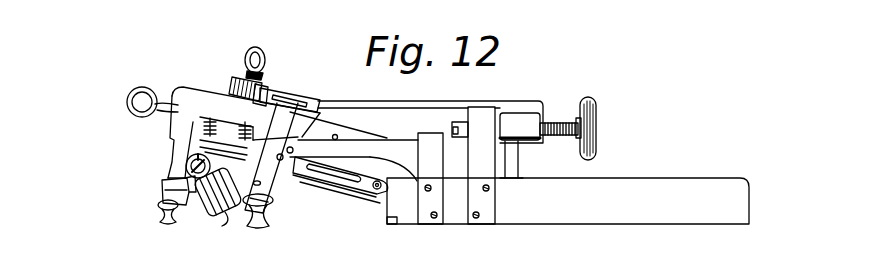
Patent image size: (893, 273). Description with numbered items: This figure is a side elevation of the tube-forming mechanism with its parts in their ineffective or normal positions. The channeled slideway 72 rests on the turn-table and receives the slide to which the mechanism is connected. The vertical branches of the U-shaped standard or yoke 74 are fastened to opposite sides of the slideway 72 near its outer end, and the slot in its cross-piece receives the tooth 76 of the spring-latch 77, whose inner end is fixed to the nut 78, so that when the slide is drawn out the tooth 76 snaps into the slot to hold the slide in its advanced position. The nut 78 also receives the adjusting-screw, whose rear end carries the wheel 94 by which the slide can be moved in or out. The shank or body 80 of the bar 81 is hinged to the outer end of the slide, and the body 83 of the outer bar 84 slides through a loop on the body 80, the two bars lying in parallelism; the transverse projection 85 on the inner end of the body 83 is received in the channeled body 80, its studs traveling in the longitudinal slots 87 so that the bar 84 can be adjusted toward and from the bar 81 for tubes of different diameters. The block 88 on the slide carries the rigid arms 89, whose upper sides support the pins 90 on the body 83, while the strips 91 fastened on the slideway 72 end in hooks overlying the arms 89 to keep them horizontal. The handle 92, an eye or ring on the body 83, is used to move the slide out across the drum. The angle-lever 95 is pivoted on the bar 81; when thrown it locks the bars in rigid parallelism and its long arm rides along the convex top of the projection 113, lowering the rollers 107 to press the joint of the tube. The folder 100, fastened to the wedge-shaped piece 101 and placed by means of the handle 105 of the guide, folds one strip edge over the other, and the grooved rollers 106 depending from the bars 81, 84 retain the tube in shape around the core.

The slideway 72 is at (568, 201).
The standard or yoke 74 is at (482, 162).
The tooth 76 is at (481, 107).
The spring-latch 77 is at (402, 102).
The nut 78 is at (521, 117).
The shank or body 80 is at (283, 170).
The bar 81 is at (283, 150).
The body 83 is at (222, 107).
The bar 84 is at (175, 145).
The transverse projection 85 is at (372, 165).
The longitudinal slots 87 is at (338, 176).
The block 88 is at (380, 192).
The rigid arms 89 is at (378, 146).
The pins 90 is at (340, 134).
The strips 91 is at (432, 199).
The handle 92 is at (128, 101).
The wheel 94 is at (596, 101).
The angle-lever 95 is at (266, 86).
The folder 100 is at (160, 192).
The wedge-shaped piece 101 is at (197, 215).
The handle 105 is at (185, 172).
The rollers 106 is at (157, 209).
The rollers 107 is at (210, 226).
The projection 113 is at (216, 84).